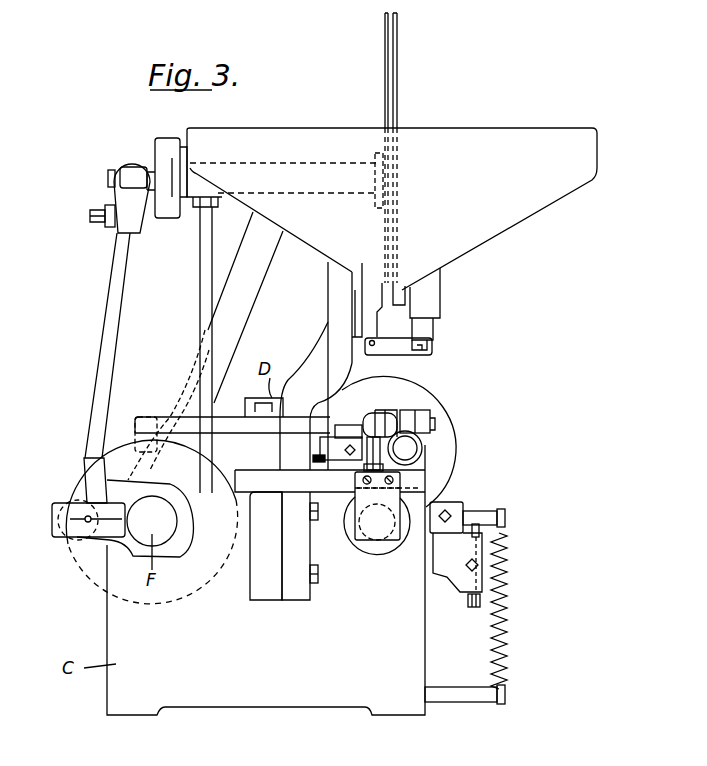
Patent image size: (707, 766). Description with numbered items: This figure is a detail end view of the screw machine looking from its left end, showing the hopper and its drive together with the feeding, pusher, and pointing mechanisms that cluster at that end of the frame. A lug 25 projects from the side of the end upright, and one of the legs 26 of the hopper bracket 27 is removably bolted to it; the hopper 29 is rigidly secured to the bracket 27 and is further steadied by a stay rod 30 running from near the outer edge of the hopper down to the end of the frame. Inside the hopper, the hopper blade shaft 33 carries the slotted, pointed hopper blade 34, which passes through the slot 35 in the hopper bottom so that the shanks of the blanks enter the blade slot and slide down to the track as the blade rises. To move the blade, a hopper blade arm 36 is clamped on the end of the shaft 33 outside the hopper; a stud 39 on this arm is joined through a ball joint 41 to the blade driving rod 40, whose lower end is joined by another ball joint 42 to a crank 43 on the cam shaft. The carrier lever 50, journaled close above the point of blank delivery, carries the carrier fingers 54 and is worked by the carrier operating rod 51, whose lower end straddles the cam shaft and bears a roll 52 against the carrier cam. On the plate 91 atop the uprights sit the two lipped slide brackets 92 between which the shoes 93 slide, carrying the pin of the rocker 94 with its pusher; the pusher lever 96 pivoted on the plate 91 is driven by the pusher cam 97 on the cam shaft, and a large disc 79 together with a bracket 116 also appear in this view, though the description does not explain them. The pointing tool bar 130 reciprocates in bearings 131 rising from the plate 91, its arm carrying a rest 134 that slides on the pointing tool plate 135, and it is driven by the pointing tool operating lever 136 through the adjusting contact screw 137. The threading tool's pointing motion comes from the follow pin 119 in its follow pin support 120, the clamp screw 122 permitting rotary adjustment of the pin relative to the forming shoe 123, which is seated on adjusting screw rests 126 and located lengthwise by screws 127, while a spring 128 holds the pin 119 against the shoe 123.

The lug 25 is at (256, 588).
The leg 26 is at (300, 595).
The hopper bracket 27 is at (330, 292).
The hopper 29 is at (529, 220).
The stay rod 30 is at (200, 263).
The hopper blade shaft 33 is at (274, 160).
The hopper blade 34 is at (397, 103).
The slot 35 is at (392, 283).
The hopper blade arm 36 is at (160, 142).
The stud 39 is at (109, 176).
The blade driving rod 40 is at (113, 270).
The ball joint 41 is at (128, 166).
The ball joint 42 is at (72, 530).
The crank 43 is at (110, 544).
The carrier lever 50 is at (442, 292).
The carrier operating rod 51 is at (238, 322).
The roll 52 is at (178, 418).
The carrier fingers 54 is at (432, 353).
The cam disc 79 is at (437, 414).
The plate 91 is at (328, 488).
The slide brackets 92 is at (376, 420).
The shoes 93 is at (384, 470).
The rocker 94 is at (380, 457).
The pusher lever 96 is at (226, 418).
The pusher cam 97 is at (100, 596).
The bearing bracket 116 is at (394, 541).
The follow pin 119 is at (483, 520).
The follow pin support 120 is at (462, 512).
The clamp screw 122 is at (442, 528).
The forming shoe 123 is at (480, 533).
The adjusting screw rests 126 is at (472, 608).
The screws 127 is at (468, 570).
The spring 128 is at (508, 562).
The pointing tool bar 130 is at (423, 450).
The bearings 131 is at (425, 443).
The rest 134 is at (330, 453).
The pointing tool plate 135 is at (314, 468).
The pointing tool operating lever 136 is at (334, 438).
The adjusting contact screw 137 is at (333, 425).